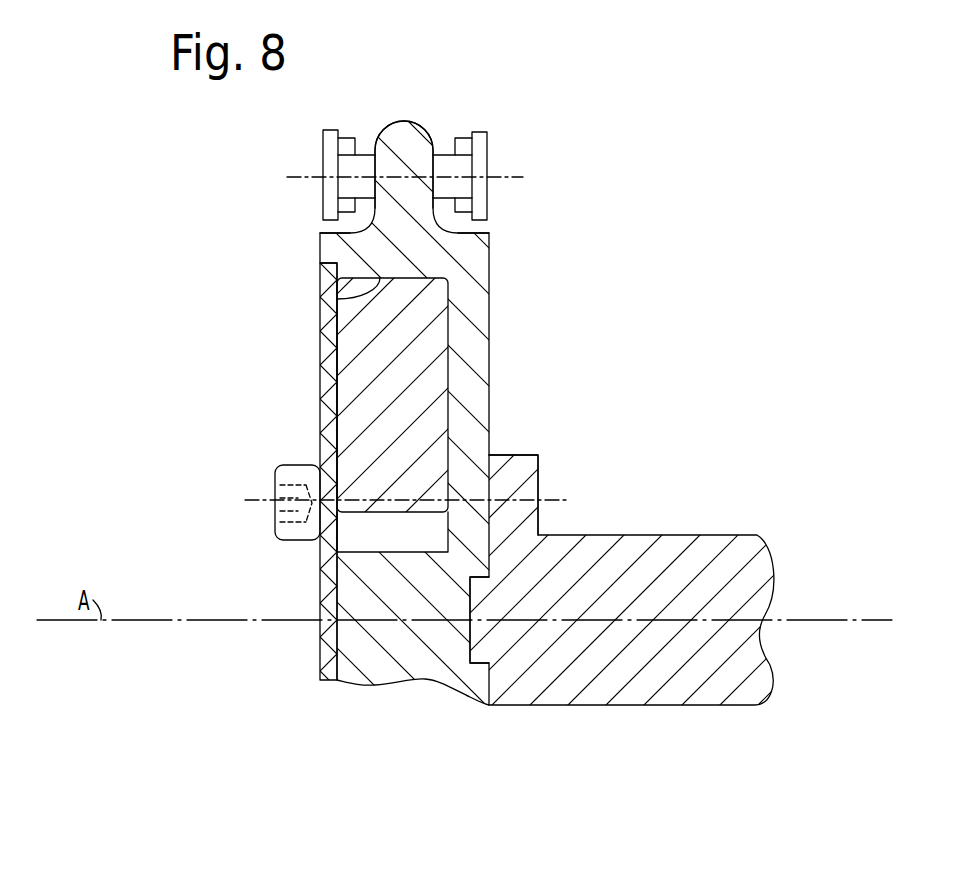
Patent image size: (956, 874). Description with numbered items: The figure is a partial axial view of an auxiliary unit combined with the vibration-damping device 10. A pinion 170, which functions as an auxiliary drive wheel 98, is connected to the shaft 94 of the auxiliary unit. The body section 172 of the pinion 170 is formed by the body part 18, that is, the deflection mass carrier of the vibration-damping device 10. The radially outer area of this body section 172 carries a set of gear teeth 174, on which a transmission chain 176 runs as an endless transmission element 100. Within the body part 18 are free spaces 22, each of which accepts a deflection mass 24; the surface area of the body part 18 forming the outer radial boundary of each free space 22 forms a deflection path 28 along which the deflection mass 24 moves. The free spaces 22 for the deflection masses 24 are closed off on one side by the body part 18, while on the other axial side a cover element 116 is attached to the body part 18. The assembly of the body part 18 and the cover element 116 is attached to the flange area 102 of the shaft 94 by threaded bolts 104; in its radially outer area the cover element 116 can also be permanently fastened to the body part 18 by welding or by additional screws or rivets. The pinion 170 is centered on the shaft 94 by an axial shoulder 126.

The vibration-damping device 10 is at (248, 349).
The body part 18 is at (489, 340).
The free space 22 is at (428, 525).
The deflection mass 24 is at (356, 425).
The deflection path 28 is at (348, 299).
The shaft 94 is at (658, 538).
The auxiliary drive wheel 98 is at (257, 238).
The endless transmission element 100 is at (322, 153).
The flange area 102 is at (540, 487).
The threaded bolt 104 is at (276, 515).
The cover element 116 is at (320, 597).
The axial shoulder 126 is at (478, 653).
The pinion 170 is at (433, 154).
The body section 172 is at (470, 253).
The gear teeth 174 is at (407, 150).
The transmission chain 176 is at (488, 167).